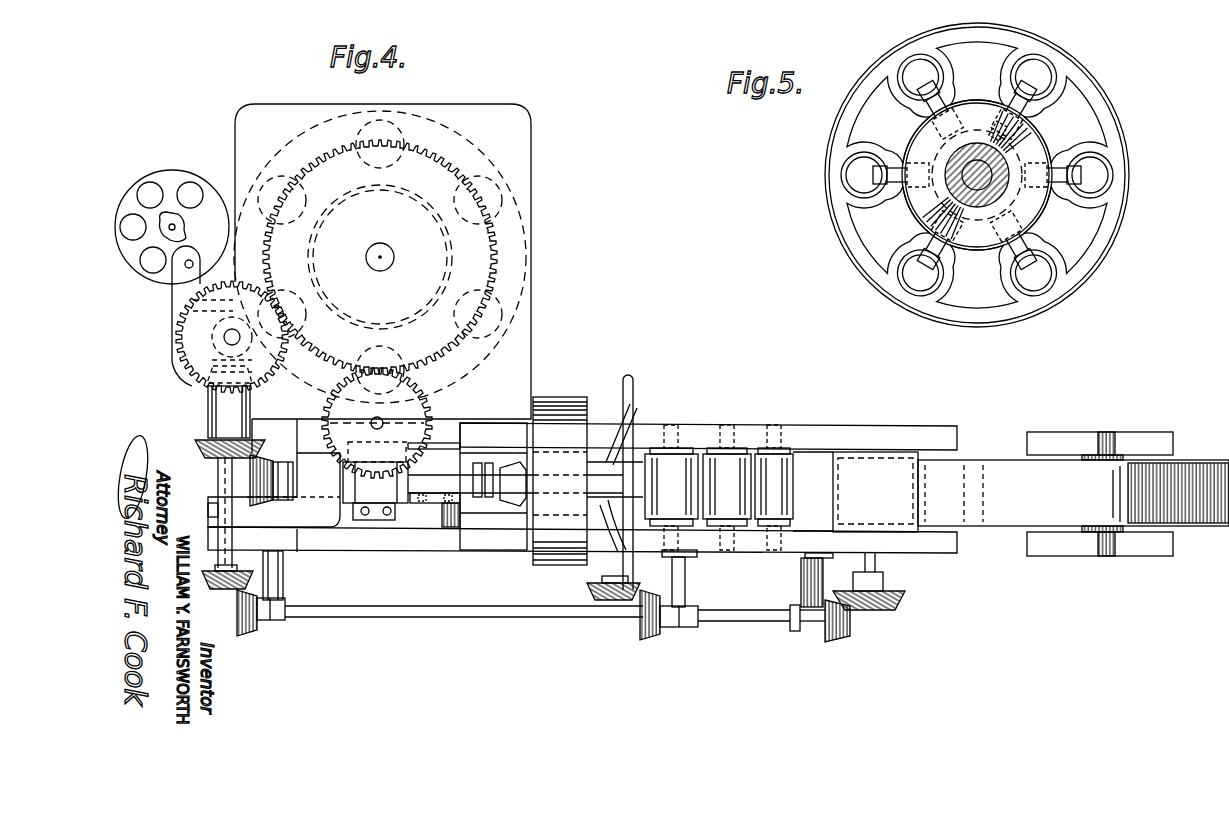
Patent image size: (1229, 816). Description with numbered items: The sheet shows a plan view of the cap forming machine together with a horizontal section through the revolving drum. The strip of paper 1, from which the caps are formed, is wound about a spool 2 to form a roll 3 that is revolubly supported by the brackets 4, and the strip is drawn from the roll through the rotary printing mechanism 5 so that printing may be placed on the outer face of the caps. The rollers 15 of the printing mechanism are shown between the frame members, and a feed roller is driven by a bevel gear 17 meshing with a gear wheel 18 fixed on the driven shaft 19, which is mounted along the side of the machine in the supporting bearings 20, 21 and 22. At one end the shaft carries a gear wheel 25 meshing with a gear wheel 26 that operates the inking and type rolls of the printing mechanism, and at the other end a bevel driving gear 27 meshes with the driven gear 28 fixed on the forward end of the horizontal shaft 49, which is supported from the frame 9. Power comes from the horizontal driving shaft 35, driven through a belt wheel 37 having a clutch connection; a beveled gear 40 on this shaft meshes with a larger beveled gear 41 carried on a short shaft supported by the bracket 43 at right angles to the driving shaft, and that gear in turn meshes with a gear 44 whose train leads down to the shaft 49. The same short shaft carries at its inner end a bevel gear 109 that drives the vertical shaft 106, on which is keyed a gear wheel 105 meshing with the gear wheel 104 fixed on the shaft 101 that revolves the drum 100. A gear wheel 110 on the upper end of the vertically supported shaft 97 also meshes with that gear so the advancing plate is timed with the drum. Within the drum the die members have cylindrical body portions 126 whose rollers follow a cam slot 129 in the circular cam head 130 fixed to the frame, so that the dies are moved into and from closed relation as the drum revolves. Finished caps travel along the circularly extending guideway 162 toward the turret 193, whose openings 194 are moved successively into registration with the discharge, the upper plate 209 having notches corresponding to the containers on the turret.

In FIG. 4, the strip of paper 1 is at (1013, 522).
In FIG. 4, the spool 2 is at (1097, 535).
In FIG. 4, the roll 3 is at (1183, 530).
In FIG. 4, the brackets 4 is at (1093, 557).
In FIG. 4, the rotary printing mechanism 5 is at (875, 492).
In FIG. 4, the frame 9 is at (530, 377).
In FIG. 4, the rollers 15 is at (760, 527).
In FIG. 4, the bevel gear 17 is at (598, 600).
In FIG. 4, the gear wheel 18 is at (645, 635).
In FIG. 4, the driven shaft 19 is at (433, 618).
In FIG. 4, the supporting bearing 20 is at (282, 590).
In FIG. 4, the supporting bearing 21 is at (683, 630).
In FIG. 4, the supporting bearing 22 is at (807, 632).
In FIG. 4, the gear wheel 25 is at (853, 628).
In FIG. 4, the gear wheel 26 is at (898, 601).
In FIG. 4, the bevel driving gear 27 is at (248, 636).
In FIG. 4, the driven gear 28 is at (228, 589).
In FIG. 4, the horizontal driving shaft 35 is at (473, 500).
In FIG. 4, the belt wheel 37 is at (553, 567).
In FIG. 4, the beveled gear 40 is at (277, 458).
In FIG. 4, the beveled gear 41 is at (198, 440).
In FIG. 4, the bracket 43 is at (255, 517).
In FIG. 4, the gear 44 is at (207, 470).
In FIG. 4, the horizontal shaft 49 is at (218, 558).
In FIG. 4, the vertically supported shaft 97 is at (373, 426).
In FIG. 4, the drum 100 is at (515, 193).
In FIG. 5, the drum 100 is at (1125, 146).
In FIG. 4, the shaft 101 is at (395, 258).
In FIG. 5, the shaft 101 is at (947, 157).
In FIG. 4, the gear wheel 104 is at (447, 176).
In FIG. 4, the gear wheel 105 is at (176, 333).
In FIG. 4, the vertical shaft 106 is at (228, 342).
In FIG. 4, the bevel gear 109 is at (267, 378).
In FIG. 4, the gear wheel 110 is at (432, 414).
In FIG. 5, the cylindrical body portion 126 is at (1115, 183).
In FIG. 5, the cam slot 129 is at (1046, 133).
In FIG. 5, the circular cam head 130 is at (1030, 212).
In FIG. 4, the guideway 162 is at (172, 299).
In FIG. 4, the turret 193 is at (170, 182).
In FIG. 4, the openings 194 is at (190, 192).
In FIG. 4, the upper plate 209 is at (147, 206).